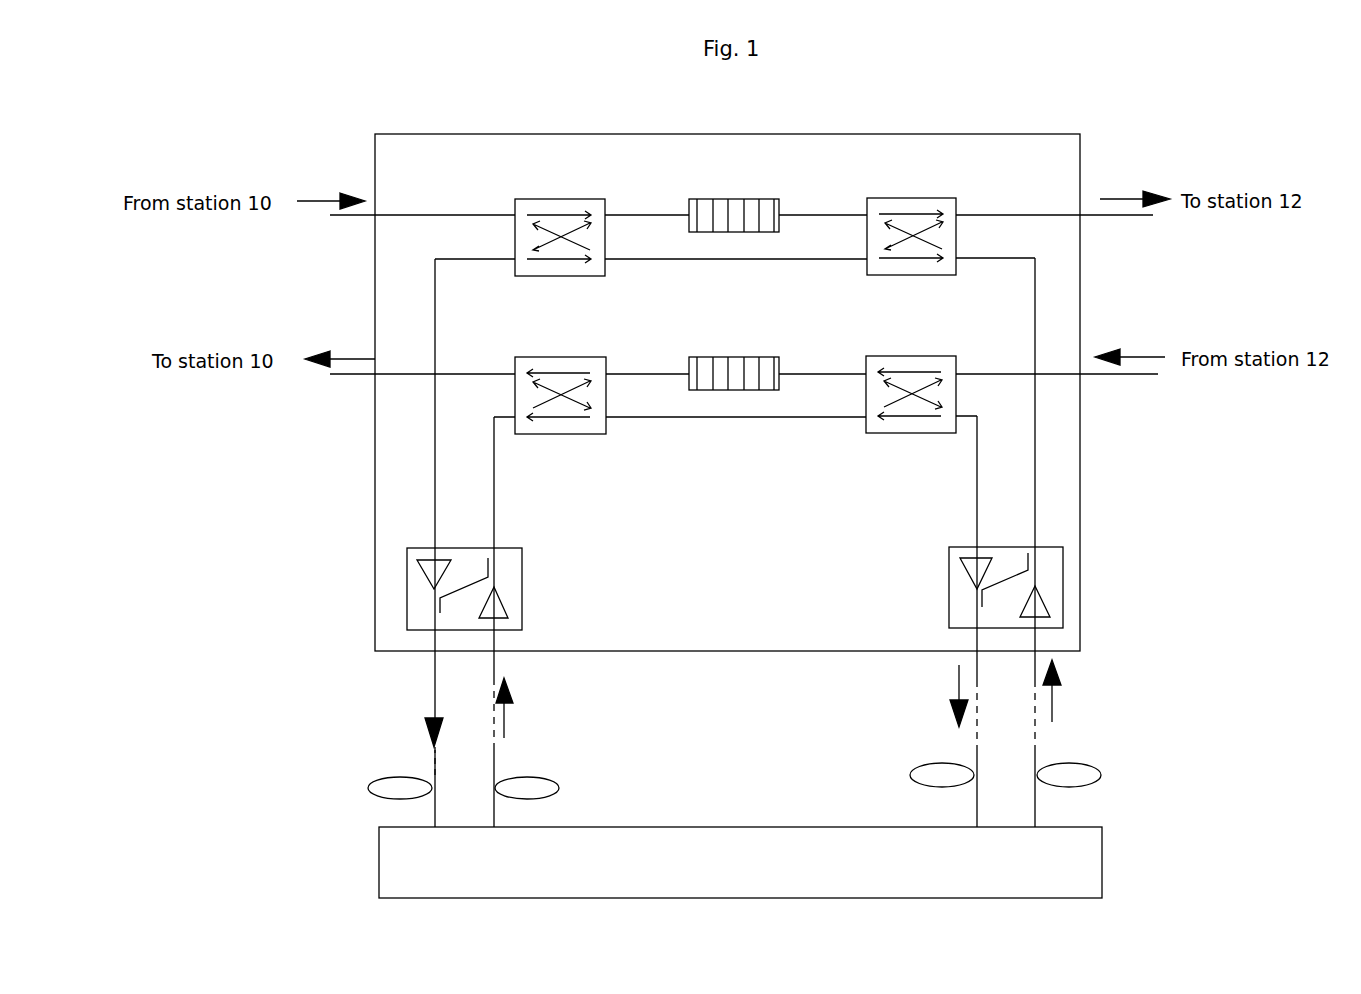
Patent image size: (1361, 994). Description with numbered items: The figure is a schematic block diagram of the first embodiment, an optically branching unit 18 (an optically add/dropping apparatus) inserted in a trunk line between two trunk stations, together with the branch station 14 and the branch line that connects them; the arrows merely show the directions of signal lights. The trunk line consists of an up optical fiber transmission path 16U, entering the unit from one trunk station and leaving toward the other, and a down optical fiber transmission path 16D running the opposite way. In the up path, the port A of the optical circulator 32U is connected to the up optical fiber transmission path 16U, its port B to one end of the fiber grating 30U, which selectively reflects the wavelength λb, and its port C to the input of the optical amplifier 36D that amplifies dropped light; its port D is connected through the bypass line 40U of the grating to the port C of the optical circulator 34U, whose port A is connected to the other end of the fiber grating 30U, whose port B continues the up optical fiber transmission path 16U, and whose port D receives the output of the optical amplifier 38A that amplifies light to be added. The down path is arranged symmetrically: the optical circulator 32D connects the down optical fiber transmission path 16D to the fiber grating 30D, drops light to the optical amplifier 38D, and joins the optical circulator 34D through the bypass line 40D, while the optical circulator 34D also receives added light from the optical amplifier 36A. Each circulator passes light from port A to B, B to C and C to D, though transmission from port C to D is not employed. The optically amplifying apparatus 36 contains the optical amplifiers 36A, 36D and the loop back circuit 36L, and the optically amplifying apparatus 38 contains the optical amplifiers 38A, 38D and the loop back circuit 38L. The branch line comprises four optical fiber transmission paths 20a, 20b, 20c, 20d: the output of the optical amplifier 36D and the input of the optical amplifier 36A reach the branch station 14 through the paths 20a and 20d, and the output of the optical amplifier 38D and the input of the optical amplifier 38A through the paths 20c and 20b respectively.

The branch station 14 is at (1095, 848).
The up optical fiber transmission path 16U is at (348, 219).
The down optical fiber transmission path 16D is at (350, 379).
The optically branching unit 18 is at (378, 153).
The optical fiber transmission path 20a is at (393, 785).
The optical fiber transmission path 20b is at (1075, 773).
The optical fiber transmission path 20c is at (925, 775).
The optical fiber transmission path 20d is at (545, 790).
The fiber grating 30U is at (722, 199).
The fiber grating 30D is at (721, 357).
The optical circulator 32U is at (557, 199).
The optical circulator 32D is at (911, 356).
The optical circulator 34U is at (911, 198).
The optical circulator 34D is at (559, 357).
The optically amplifying apparatus 36 is at (487, 565).
The optical amplifier 36A is at (498, 600).
The optical amplifier 36D is at (425, 556).
The loop back circuit 36L is at (466, 575).
The optically amplifying apparatus 38 is at (1006, 567).
The optical amplifier 38A is at (1040, 600).
The optical amplifier 38D is at (962, 564).
The loop back circuit 38L is at (1004, 575).
The bypass line 40U is at (686, 264).
The bypass line 40D is at (731, 421).